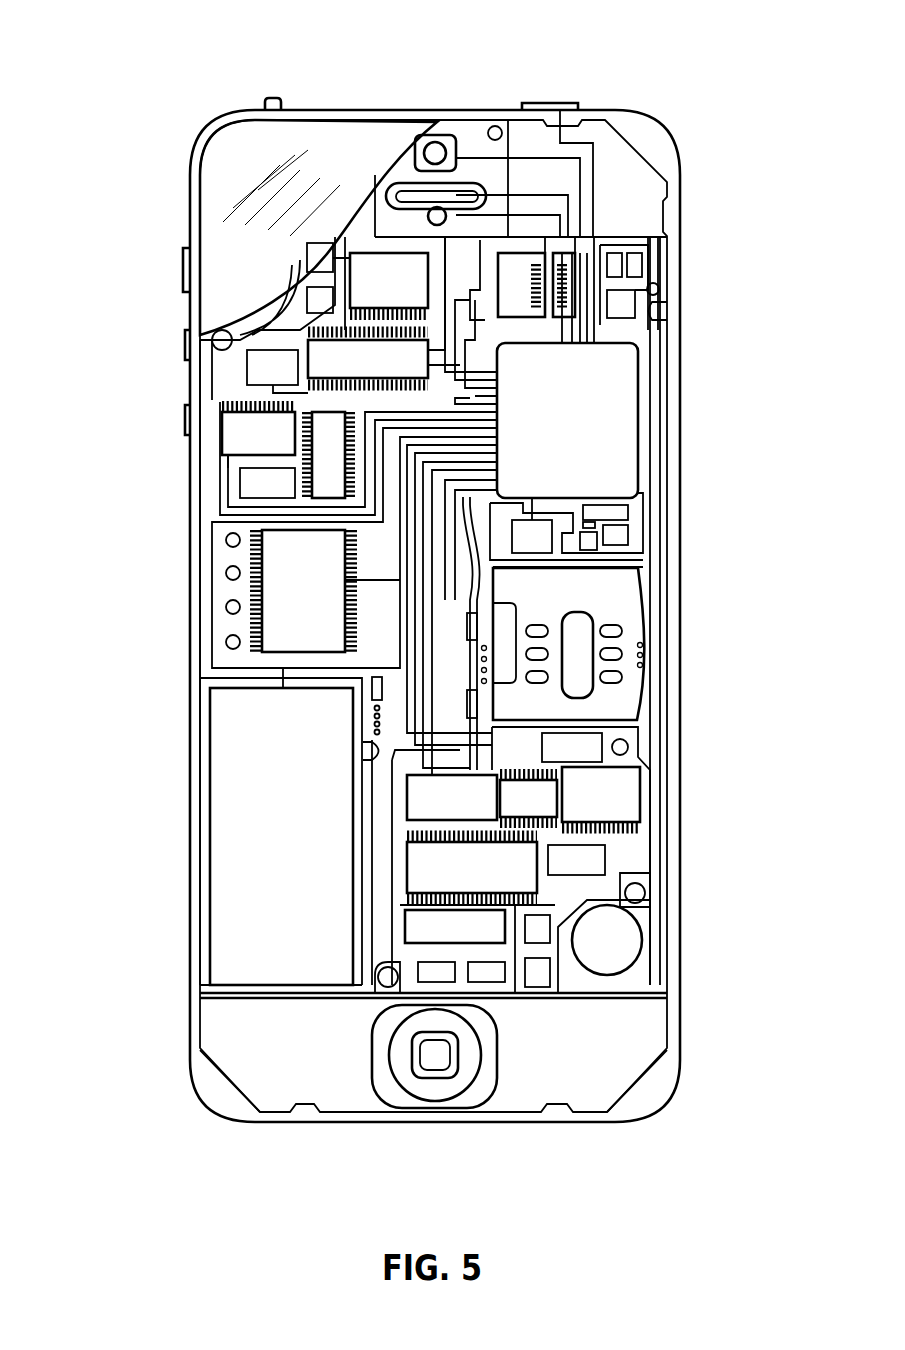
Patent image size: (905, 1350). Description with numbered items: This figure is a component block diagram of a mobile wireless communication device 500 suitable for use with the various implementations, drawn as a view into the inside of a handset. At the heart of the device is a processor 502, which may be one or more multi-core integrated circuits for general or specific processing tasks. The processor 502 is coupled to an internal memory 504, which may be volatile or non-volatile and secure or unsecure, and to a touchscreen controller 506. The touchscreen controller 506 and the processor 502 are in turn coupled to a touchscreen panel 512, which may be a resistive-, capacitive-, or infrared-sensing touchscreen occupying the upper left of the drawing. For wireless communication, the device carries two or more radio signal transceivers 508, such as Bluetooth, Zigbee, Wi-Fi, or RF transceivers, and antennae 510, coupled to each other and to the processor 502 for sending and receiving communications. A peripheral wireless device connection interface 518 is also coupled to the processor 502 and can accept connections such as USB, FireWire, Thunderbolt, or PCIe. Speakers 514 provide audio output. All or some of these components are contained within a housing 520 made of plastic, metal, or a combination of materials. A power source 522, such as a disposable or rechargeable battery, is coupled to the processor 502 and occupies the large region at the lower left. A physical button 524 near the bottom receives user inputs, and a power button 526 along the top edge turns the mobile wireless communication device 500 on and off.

The mobile wireless communication device 500 is at (128, 92).
The processor 502 is at (436, 611).
The internal memory 504 is at (353, 315).
The touchscreen controller 506 is at (367, 283).
The radio signal transceivers 508 is at (588, 270).
The antennae 510 is at (633, 300).
The touchscreen panel 512 is at (225, 196).
The speakers 514 is at (392, 182).
The peripheral wireless device connection interface 518 is at (465, 949).
The housing 520 is at (674, 1018).
The power source 522 is at (291, 831).
The physical button 524 is at (440, 1065).
The power button 526 is at (562, 105).